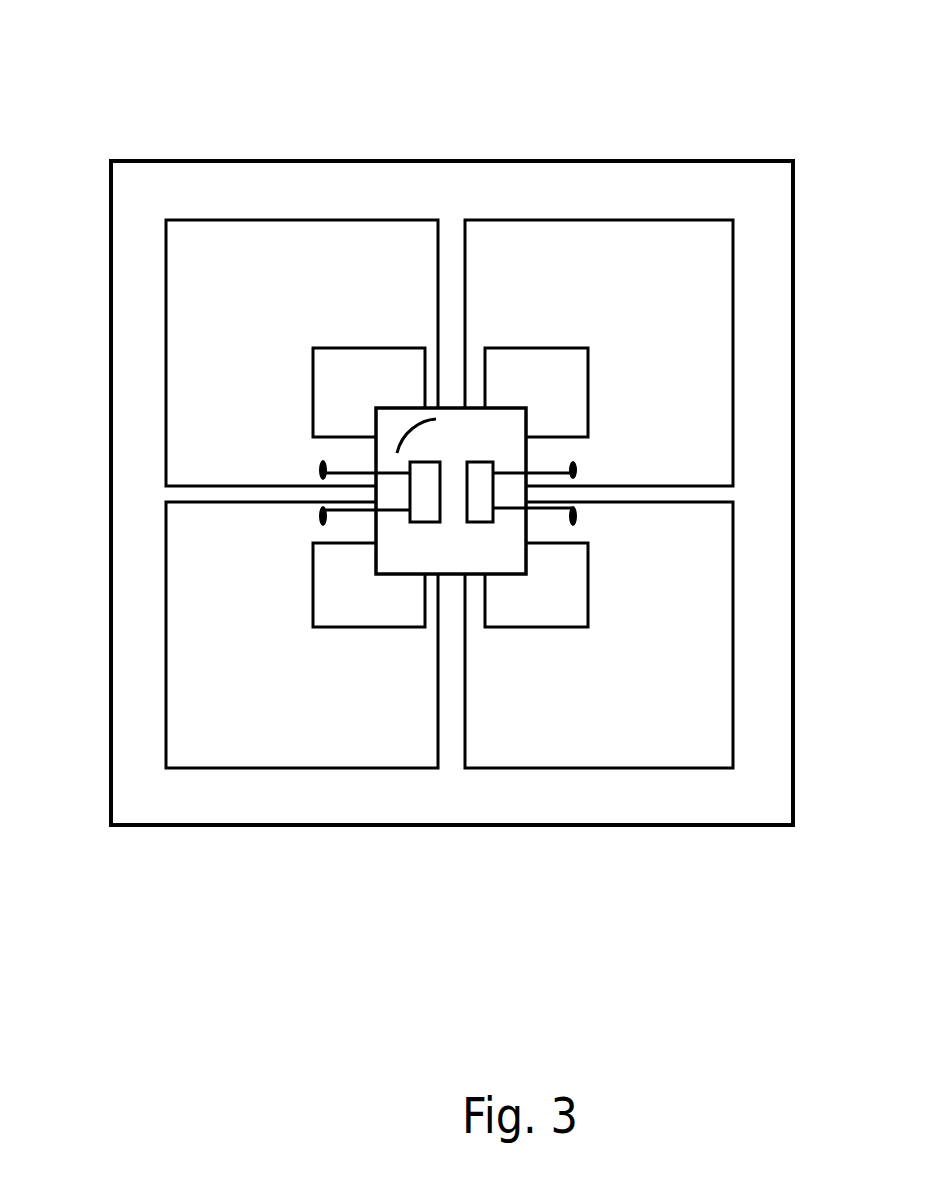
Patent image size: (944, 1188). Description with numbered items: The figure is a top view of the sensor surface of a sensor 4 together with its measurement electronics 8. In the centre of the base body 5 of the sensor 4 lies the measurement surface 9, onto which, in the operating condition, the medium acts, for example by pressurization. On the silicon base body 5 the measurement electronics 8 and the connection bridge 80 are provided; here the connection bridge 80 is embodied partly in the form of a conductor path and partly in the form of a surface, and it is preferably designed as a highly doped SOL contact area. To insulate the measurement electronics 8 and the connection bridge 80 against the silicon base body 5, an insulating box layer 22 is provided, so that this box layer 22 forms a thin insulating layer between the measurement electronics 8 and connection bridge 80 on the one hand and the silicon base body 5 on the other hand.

The sensor 4 is at (112, 883).
The base body 5 is at (413, 157).
The measurement electronics 8 is at (482, 477).
The measurement surface 9 is at (433, 417).
The insulating box layer 22 is at (140, 193).
The connection bridge 80 is at (540, 473).